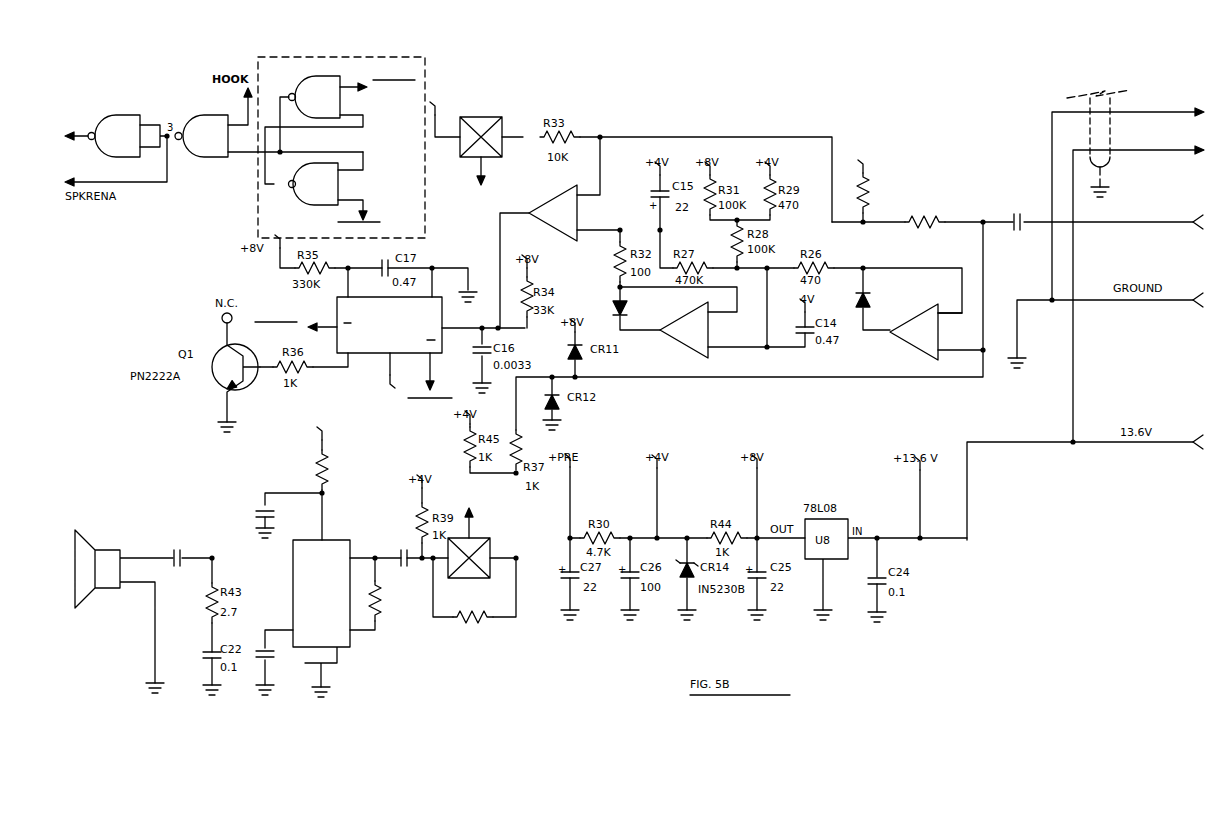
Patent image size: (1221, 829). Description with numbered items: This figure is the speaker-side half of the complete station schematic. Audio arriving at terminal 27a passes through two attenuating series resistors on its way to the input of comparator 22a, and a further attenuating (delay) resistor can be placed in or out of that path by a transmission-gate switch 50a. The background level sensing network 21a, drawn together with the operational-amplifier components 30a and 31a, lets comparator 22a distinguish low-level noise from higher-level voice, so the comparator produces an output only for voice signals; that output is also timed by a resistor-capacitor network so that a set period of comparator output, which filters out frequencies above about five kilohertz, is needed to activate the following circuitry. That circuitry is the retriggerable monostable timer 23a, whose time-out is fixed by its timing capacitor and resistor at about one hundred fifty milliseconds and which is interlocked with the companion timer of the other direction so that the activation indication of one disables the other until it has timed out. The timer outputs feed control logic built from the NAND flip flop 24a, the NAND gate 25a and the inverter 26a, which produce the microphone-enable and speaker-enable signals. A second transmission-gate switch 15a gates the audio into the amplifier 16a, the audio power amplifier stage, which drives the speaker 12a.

The loudspeaker 12a is at (88, 604).
The transmission gate switch 15a is at (538, 615).
The amplifier 16a is at (290, 594).
The background level sensing network 21a is at (848, 357).
The comparator 22a is at (566, 188).
The retriggerable monostable timer 23a is at (336, 298).
The NAND flip flop 24a is at (328, 57).
The NAND gate 25a is at (195, 114).
The inverter 26a is at (120, 114).
The terminal 27a is at (982, 220).
The operational amplifier 30a is at (916, 352).
The operational amplifier 31a is at (685, 350).
The transmission gate switch 50a is at (530, 64).